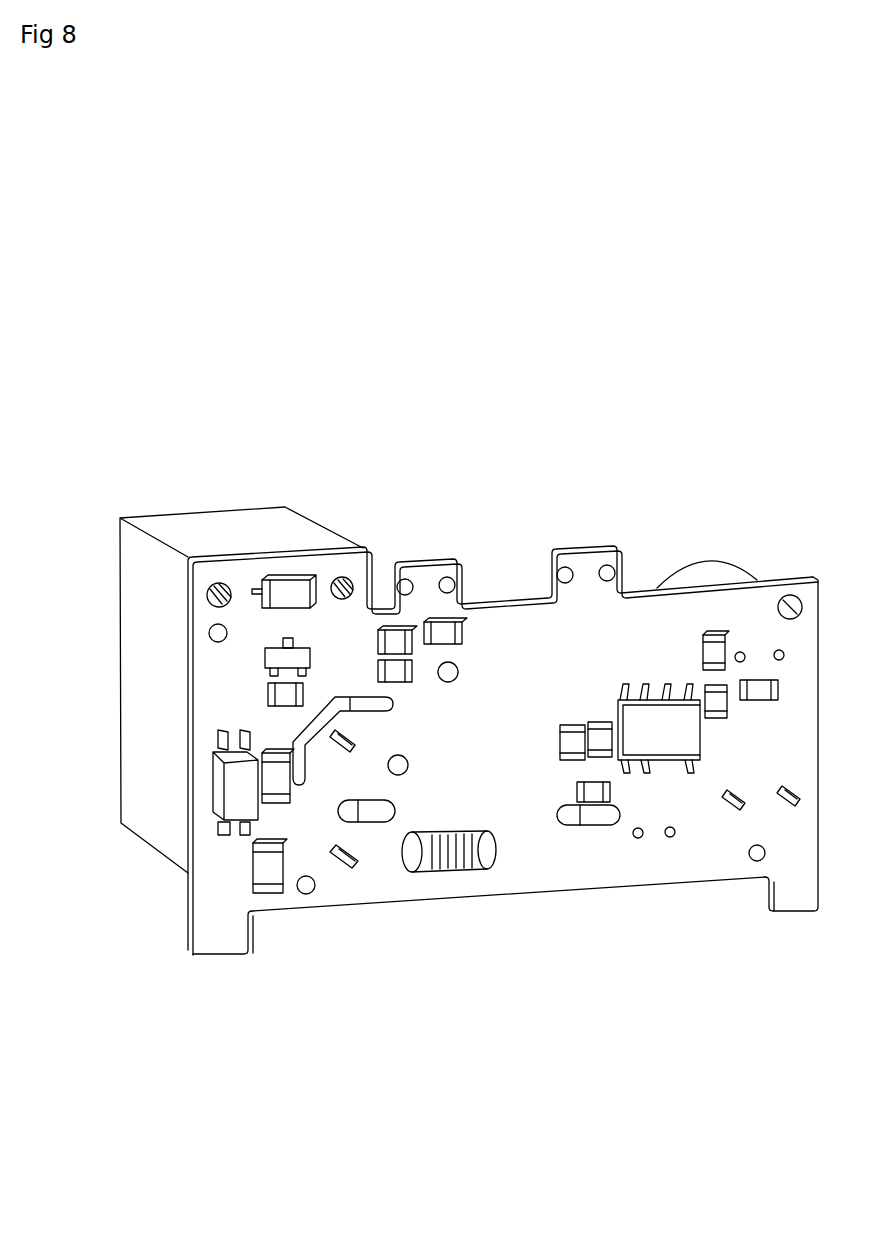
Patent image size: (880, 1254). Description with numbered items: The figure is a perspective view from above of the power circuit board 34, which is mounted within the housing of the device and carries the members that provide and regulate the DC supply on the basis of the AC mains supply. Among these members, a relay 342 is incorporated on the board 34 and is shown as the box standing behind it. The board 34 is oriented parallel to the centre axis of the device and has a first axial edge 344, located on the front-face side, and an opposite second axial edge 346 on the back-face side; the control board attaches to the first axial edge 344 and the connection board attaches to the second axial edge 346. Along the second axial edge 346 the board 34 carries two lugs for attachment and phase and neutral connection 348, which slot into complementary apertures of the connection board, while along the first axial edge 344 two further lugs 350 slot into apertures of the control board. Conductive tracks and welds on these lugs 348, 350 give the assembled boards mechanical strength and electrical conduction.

The circuit board 34 is at (518, 842).
The relay 342 is at (220, 537).
The first axial edge 344 is at (643, 592).
The second axial edge 346 is at (447, 900).
The lugs for attachment and connection 348 is at (210, 935).
The lugs for attachment and connection 350 is at (582, 566).